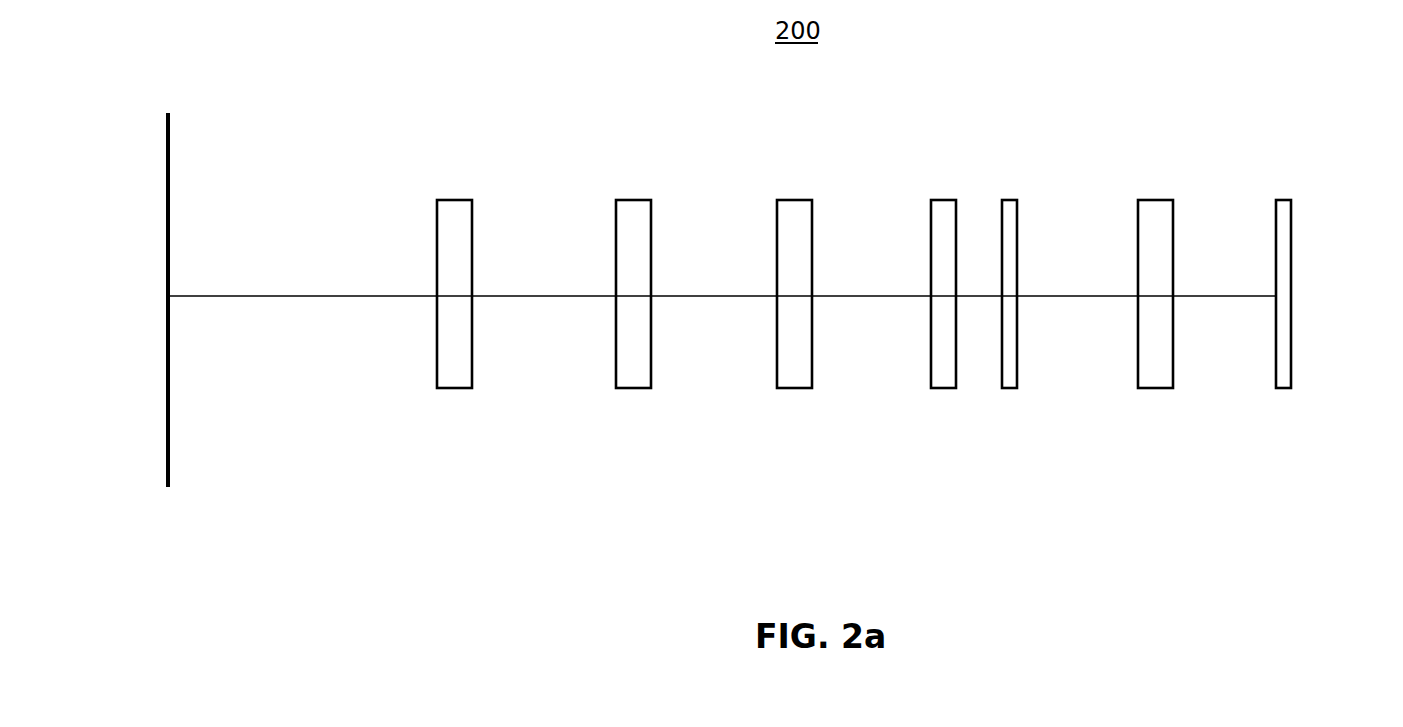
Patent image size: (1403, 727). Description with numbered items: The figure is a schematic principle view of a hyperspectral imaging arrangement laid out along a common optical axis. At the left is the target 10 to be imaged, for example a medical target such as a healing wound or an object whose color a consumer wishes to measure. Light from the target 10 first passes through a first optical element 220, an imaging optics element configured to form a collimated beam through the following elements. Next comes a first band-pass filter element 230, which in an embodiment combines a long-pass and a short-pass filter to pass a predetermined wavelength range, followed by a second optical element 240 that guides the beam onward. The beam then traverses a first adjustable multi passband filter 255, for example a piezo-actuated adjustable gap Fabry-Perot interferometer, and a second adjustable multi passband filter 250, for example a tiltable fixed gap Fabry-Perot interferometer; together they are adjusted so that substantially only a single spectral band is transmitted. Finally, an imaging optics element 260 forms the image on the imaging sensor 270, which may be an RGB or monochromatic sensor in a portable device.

The target 10 is at (171, 137).
The first optical element 220 is at (457, 200).
The first band-pass filter element 230 is at (636, 200).
The second optical element 240 is at (797, 200).
The first adjustable multi passband filter 255 is at (944, 200).
The second adjustable multi passband filter 250 is at (1010, 200).
The second optical element 260 is at (1158, 200).
The imaging sensor 270 is at (1285, 200).